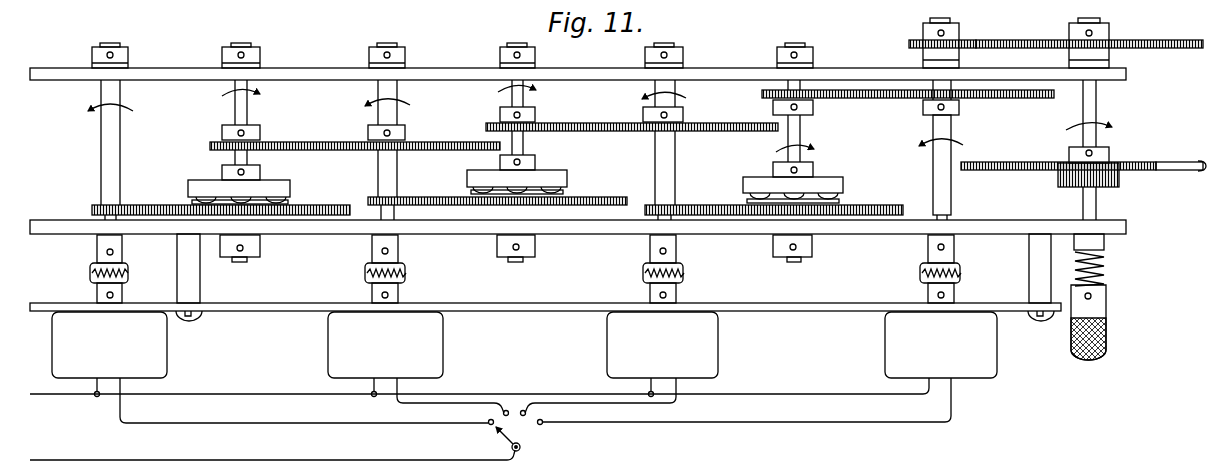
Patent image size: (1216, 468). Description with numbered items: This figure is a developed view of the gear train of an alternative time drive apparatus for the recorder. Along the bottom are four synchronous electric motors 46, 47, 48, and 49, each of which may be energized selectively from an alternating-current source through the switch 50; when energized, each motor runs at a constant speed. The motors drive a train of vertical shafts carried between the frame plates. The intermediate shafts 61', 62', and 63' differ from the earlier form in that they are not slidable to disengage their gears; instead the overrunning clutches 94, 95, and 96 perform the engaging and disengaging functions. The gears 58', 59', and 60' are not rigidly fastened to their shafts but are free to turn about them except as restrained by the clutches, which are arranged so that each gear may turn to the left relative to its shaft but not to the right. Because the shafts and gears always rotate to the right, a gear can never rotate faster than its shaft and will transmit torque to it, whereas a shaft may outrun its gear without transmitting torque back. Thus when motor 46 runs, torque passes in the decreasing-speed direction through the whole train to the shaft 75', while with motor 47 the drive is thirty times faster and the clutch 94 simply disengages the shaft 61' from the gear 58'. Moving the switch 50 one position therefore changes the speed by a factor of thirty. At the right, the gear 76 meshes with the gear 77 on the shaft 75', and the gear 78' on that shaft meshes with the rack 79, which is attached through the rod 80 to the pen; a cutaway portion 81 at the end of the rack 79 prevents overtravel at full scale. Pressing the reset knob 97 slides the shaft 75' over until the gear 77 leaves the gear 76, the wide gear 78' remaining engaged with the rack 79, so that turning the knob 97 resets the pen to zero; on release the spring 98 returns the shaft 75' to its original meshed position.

The synchronous electric motor 46 is at (109, 345).
The synchronous electric motor 47 is at (385, 345).
The synchronous electric motor 48 is at (662, 345).
The synchronous electric motor 49 is at (941, 345).
The switch 50 is at (520, 449).
The gear 58' is at (230, 194).
The gear 59' is at (504, 186).
The gear 60' is at (780, 193).
The intermediate shaft 61' is at (255, 171).
The intermediate shaft 62' is at (533, 171).
The intermediate shaft 63' is at (807, 171).
The shaft 75' is at (1101, 119).
The gear 76 is at (910, 42).
The gear 77 is at (1152, 41).
The gear 78' is at (1106, 185).
The rack 79 is at (1152, 160).
The rod 80 is at (1203, 171).
The cutaway portion 81 is at (1180, 160).
The overrunning clutch 94 is at (288, 186).
The overrunning clutch 95 is at (566, 178).
The overrunning clutch 96 is at (842, 184).
The reset knob 97 is at (1106, 333).
The spring 98 is at (1105, 266).